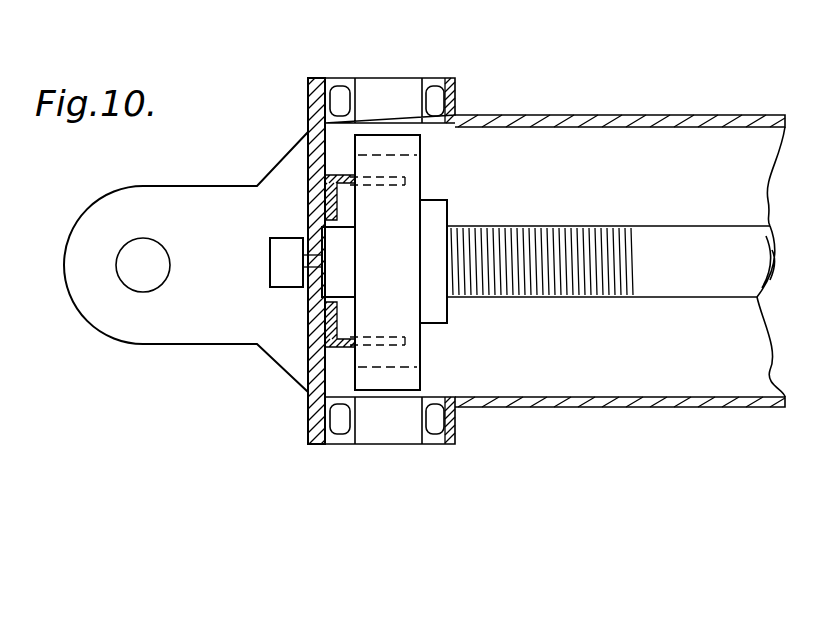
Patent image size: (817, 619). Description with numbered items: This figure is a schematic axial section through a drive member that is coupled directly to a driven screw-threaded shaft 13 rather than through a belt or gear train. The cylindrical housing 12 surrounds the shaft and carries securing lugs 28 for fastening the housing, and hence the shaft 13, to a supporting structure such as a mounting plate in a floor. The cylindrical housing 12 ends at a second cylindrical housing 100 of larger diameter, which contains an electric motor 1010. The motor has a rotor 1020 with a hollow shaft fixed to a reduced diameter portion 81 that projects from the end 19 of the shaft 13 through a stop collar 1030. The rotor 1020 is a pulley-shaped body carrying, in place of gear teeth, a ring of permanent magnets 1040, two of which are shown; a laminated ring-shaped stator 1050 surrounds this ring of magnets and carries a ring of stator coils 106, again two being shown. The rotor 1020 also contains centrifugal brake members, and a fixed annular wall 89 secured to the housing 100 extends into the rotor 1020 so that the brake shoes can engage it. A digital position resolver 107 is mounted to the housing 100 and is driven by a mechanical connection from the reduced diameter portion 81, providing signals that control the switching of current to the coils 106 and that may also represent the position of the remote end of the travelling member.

The cylindrical housing 12 is at (628, 407).
The screw-threaded shaft 13 is at (718, 228).
The end of the shaft 19 is at (449, 300).
The securing lugs 28 is at (152, 334).
The reduced diameter portion 81 is at (320, 292).
The fixed annular wall 89 is at (406, 181).
The cylindrical housing 100 is at (306, 105).
The stator coils 106 is at (432, 436).
The digital position resolver 107 is at (287, 236).
The electric motor 1010 is at (379, 76).
The rotor 1020 is at (421, 178).
The stop collar 1030 is at (448, 222).
The permanent magnets 1040 is at (422, 140).
The laminated ring-shaped stator 1050 is at (394, 98).